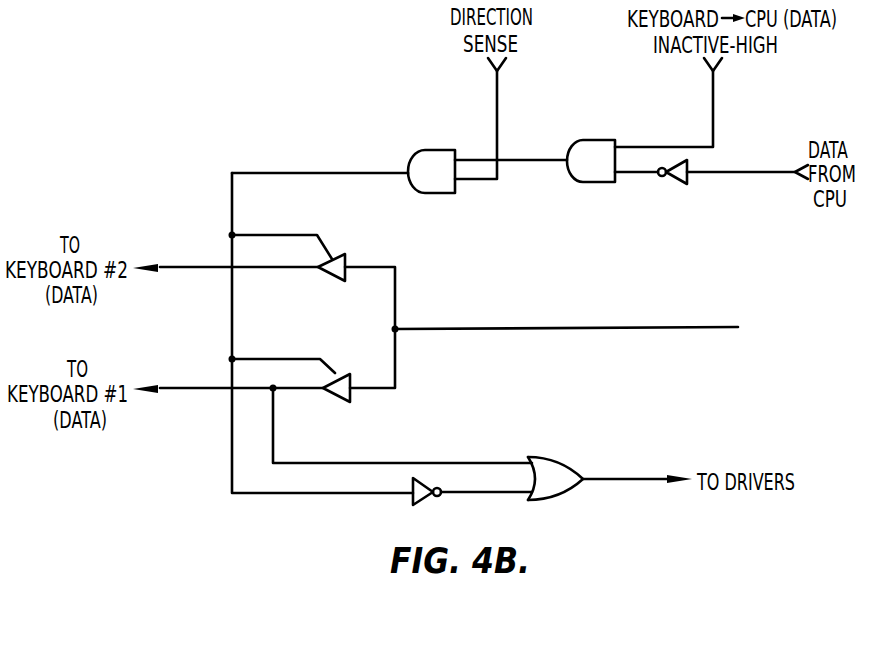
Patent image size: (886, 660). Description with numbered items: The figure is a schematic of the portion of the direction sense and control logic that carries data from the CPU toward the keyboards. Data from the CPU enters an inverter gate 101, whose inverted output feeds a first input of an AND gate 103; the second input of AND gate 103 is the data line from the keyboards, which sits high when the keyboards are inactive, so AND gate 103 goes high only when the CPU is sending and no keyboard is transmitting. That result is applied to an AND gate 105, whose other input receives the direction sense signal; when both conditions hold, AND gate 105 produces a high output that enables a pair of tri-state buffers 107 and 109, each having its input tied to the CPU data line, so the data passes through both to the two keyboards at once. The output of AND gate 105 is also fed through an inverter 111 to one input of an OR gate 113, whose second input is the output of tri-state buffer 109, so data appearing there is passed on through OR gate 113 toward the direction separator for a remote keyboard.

The inverter gate 101 is at (673, 183).
The AND gate 103 is at (602, 138).
The AND gate 105 is at (430, 149).
The tri-state buffer 107 is at (343, 255).
The tri-state buffer 109 is at (343, 372).
The inverter 111 is at (438, 485).
The OR gate 113 is at (562, 457).